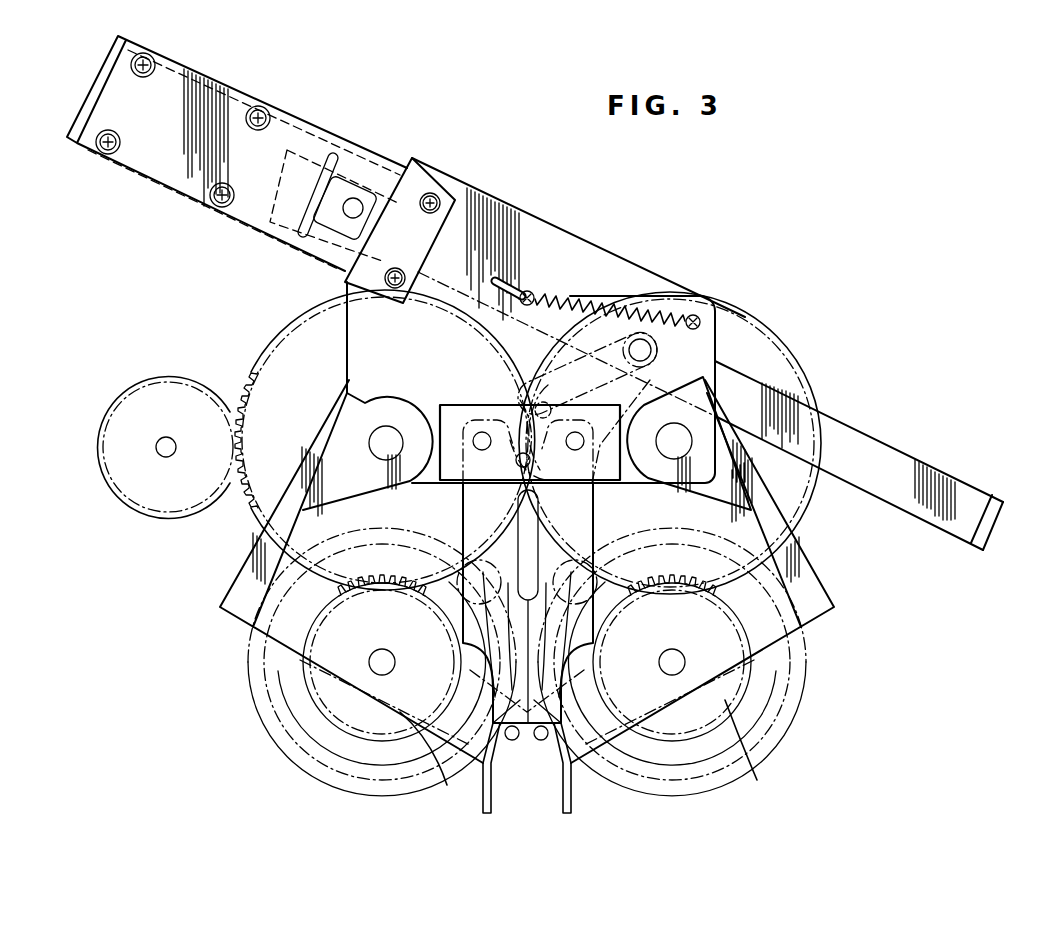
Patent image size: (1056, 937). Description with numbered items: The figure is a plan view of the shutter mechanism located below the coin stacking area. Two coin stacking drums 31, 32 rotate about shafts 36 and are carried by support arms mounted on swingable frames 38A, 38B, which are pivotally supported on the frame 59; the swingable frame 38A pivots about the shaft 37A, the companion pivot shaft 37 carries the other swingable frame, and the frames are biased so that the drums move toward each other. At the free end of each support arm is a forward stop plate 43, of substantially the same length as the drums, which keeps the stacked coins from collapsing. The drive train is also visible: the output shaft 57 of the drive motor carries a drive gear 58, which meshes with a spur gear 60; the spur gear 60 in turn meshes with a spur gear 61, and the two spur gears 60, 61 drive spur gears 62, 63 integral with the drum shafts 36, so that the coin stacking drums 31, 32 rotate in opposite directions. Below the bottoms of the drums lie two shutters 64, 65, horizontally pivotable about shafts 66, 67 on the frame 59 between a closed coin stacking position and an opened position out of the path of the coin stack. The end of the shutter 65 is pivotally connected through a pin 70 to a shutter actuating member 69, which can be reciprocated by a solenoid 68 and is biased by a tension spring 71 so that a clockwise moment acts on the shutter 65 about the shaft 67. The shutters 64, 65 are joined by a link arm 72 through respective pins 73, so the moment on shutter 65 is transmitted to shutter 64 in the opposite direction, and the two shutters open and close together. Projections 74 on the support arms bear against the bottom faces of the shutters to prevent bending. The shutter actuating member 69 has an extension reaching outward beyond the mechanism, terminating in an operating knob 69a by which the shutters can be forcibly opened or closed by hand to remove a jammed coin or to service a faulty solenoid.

The solenoid 68 is at (283, 130).
The shutter actuating member 69 is at (790, 400).
The operating knob 69a is at (1000, 524).
The frame 59 is at (645, 283).
The tension spring 71 is at (556, 288).
The pin 70 is at (652, 360).
The spur gear 60 is at (278, 360).
The spur gear 61 is at (792, 500).
The drive gear 58 is at (156, 512).
The output shaft 57 is at (173, 454).
The pivot shaft 37 is at (388, 428).
The shaft 37A is at (677, 455).
The shutter 64 is at (456, 517).
The shaft 66 is at (483, 432).
The shaft 67 is at (580, 432).
The pin 73 is at (548, 385).
The link arm 72 is at (562, 470).
The swingable frame 38B is at (230, 614).
The swingable frame 38A is at (835, 610).
The shutter 65 is at (586, 655).
The projection 74 is at (412, 650).
The shaft 36 is at (392, 668).
The coin stacking drum 32 is at (300, 737).
The coin stacking drum 31 is at (780, 715).
The spur gear 62 is at (440, 770).
The spur gear 63 is at (757, 765).
The forward stop plate 43 is at (495, 772).